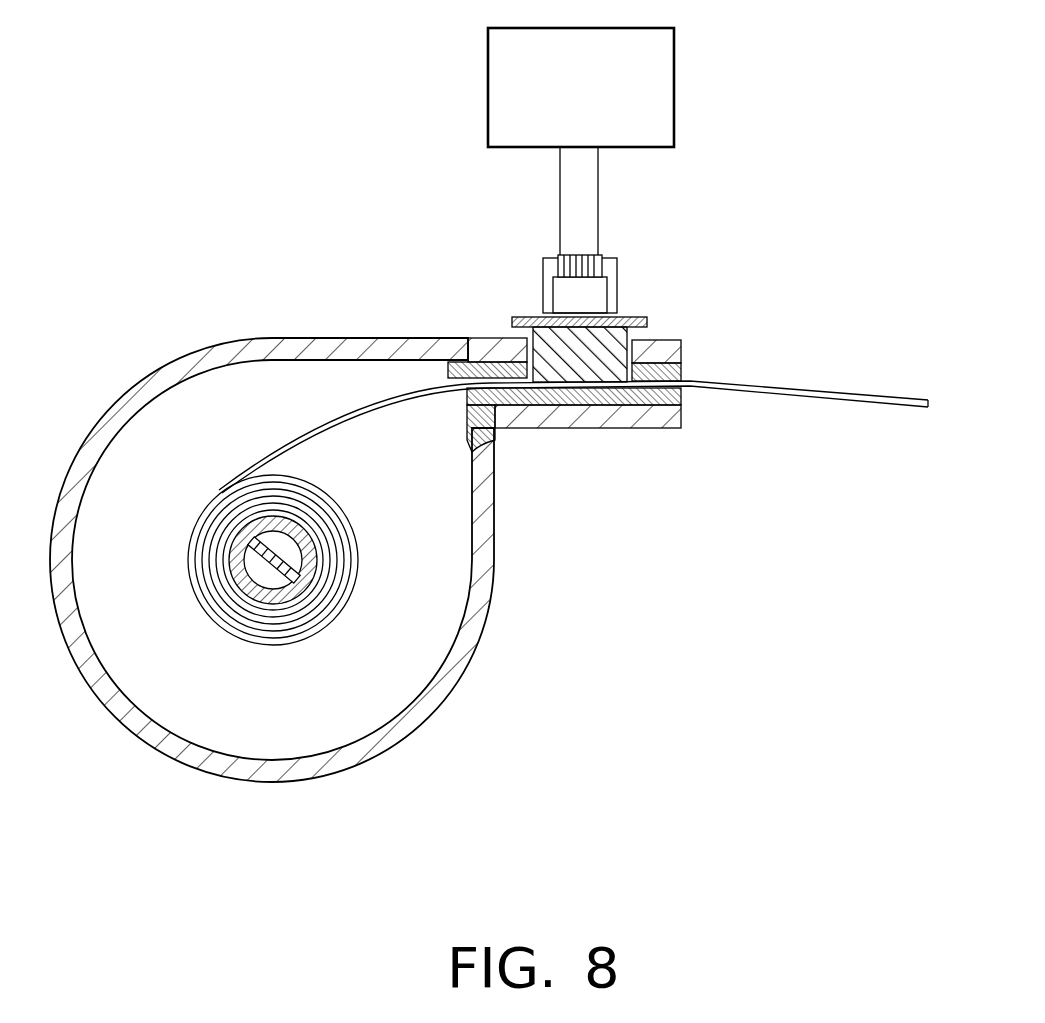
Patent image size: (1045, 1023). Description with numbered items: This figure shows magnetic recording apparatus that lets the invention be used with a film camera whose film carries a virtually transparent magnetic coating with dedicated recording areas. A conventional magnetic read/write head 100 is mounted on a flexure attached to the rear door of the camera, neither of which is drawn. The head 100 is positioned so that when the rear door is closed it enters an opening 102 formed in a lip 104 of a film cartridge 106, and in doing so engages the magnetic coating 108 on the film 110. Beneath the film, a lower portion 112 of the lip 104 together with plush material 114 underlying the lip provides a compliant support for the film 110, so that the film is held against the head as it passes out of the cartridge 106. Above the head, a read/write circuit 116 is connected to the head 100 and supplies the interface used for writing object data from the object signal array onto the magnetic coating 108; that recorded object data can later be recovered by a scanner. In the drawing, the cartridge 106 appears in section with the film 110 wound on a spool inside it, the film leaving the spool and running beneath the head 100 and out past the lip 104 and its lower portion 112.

The magnetic read/write head 100 is at (647, 330).
The opening 102 is at (511, 325).
The lip 104 is at (502, 347).
The film cartridge 106 is at (265, 778).
The magnetic coating 108 is at (812, 380).
The film 110 is at (895, 407).
The lower portion 112 is at (578, 430).
The plush material 114 is at (682, 398).
The read/write circuit 116 is at (674, 88).